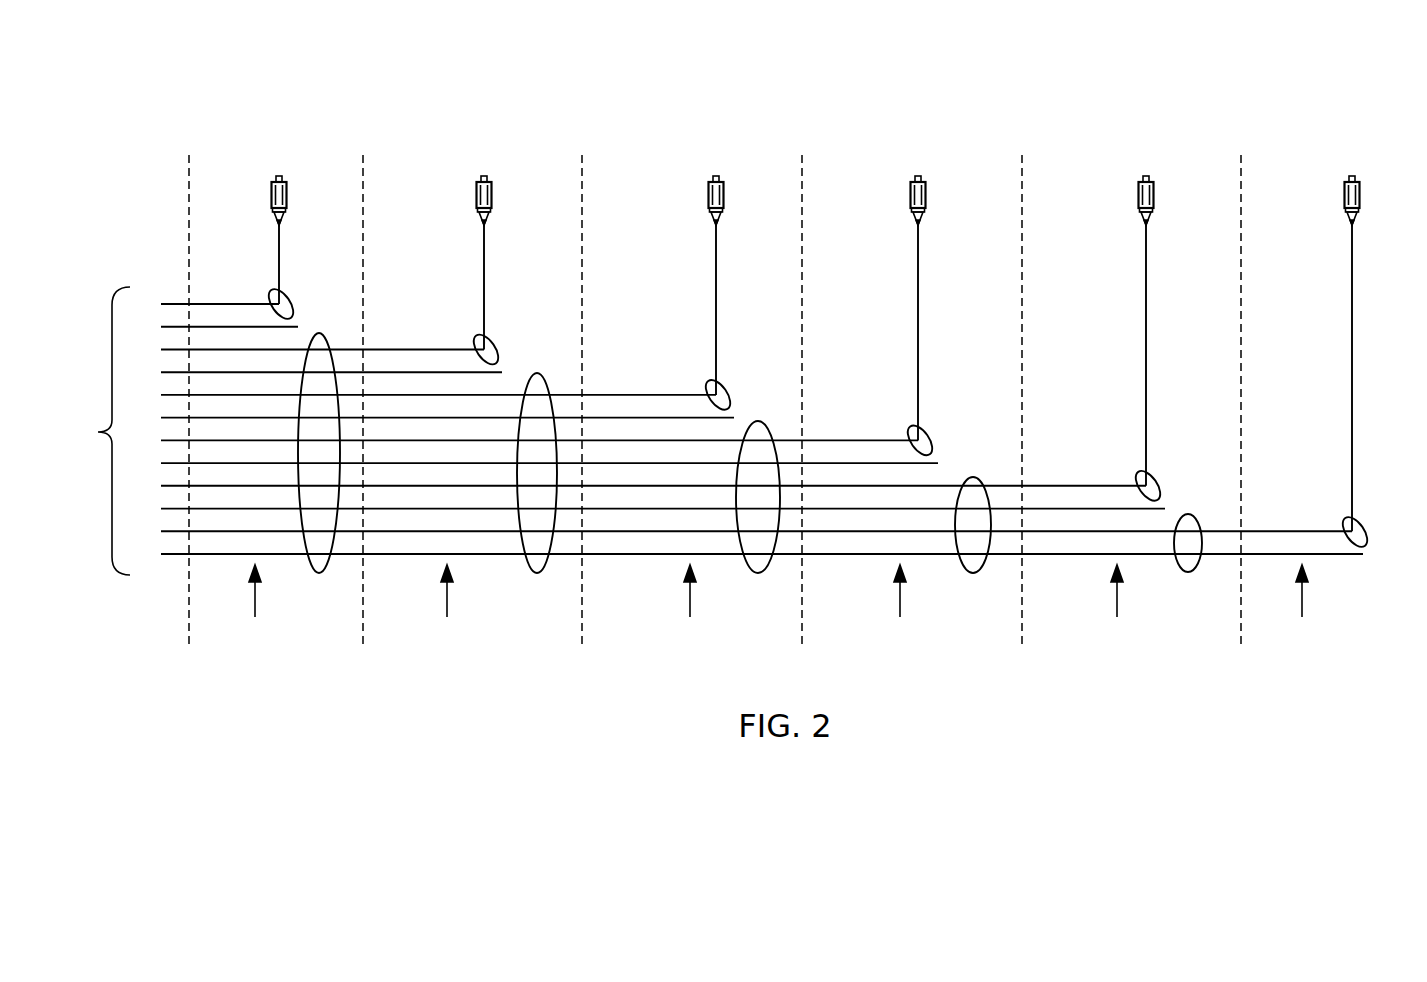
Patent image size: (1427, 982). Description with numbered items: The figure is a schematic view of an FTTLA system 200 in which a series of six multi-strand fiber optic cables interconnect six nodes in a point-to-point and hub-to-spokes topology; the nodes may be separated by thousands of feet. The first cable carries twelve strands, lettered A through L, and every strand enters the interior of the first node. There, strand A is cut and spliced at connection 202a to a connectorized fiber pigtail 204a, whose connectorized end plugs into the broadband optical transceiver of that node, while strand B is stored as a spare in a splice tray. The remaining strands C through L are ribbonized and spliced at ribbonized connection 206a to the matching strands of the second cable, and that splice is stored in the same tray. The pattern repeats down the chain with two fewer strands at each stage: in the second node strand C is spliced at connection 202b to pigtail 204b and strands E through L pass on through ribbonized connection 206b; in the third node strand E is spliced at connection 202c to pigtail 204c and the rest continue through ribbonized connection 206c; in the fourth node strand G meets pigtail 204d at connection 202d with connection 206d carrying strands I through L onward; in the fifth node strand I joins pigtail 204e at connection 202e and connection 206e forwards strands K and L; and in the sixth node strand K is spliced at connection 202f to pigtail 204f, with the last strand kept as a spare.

The FTTLA system 200 is at (168, 86).
The connection 202a is at (290, 295).
The connection 202b is at (494, 341).
The connection 202c is at (726, 386).
The connection 202d is at (929, 433).
The connection 202e is at (1156, 478).
The connection 202f is at (1362, 525).
The connectorized fiber pigtail 204a is at (279, 266).
The connectorized fiber pigtail 204b is at (484, 289).
The connectorized fiber pigtail 204c is at (716, 312).
The connectorized fiber pigtail 204d is at (918, 335).
The connectorized fiber pigtail 204e is at (1146, 358).
The connectorized fiber pigtail 204f is at (1352, 381).
The ribbonized connection 206a is at (319, 573).
The ribbonized connection 206b is at (537, 573).
The ribbonized connection 206c is at (758, 573).
The ribbonized connection 206d is at (973, 573).
The connection 206e is at (1188, 572).